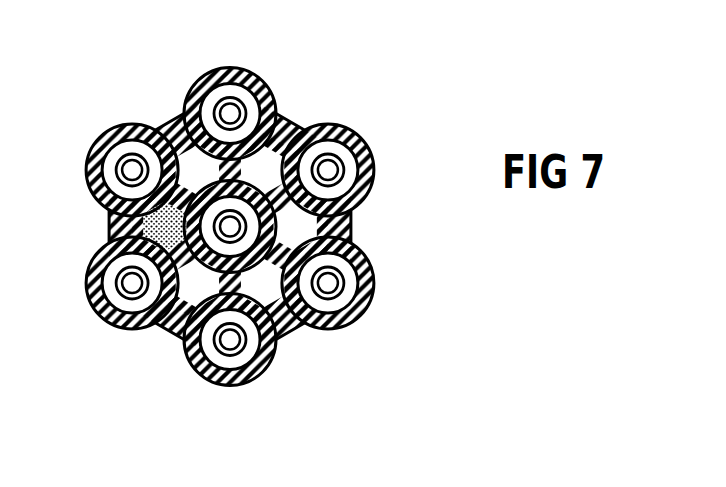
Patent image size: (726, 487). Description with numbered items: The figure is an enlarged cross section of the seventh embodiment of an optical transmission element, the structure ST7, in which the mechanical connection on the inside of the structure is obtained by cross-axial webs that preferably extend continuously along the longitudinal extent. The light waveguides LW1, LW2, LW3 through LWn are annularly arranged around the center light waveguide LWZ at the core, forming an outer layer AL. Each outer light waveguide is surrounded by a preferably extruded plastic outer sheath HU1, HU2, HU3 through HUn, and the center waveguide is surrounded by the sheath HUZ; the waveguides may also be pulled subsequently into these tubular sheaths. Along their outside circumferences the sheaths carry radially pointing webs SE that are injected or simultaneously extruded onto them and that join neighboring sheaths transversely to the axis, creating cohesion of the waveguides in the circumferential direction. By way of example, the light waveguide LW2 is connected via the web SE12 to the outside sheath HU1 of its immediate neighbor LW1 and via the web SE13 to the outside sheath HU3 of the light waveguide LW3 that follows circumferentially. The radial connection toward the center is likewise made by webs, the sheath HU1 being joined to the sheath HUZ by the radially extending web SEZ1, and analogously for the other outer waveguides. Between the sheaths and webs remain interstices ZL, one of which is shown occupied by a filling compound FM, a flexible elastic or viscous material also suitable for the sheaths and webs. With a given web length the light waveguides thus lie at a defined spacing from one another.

The plastic outer sheath HU1 is at (118, 122).
The plastic outer sheath HU2 is at (222, 75).
The plastic outer sheath HU3 is at (368, 172).
The sheath around center waveguide HUZ is at (274, 227).
The plastic outer sheath HUn is at (267, 370).
The light waveguide LW1 is at (95, 137).
The light waveguide LW2 is at (256, 68).
The light waveguide LW3 is at (364, 129).
The center light waveguide LWZ is at (333, 237).
The light waveguide LWn is at (231, 394).
The web SE12 is at (177, 125).
The web SE13 is at (286, 128).
The web SE is at (183, 322).
The radially extending web SEZ1 is at (148, 188).
The filling compound FM is at (150, 232).
The interstice ZL is at (272, 290).
The outer layer AL is at (194, 378).
The structure of the seventh embodiment ST7 is at (486, 264).